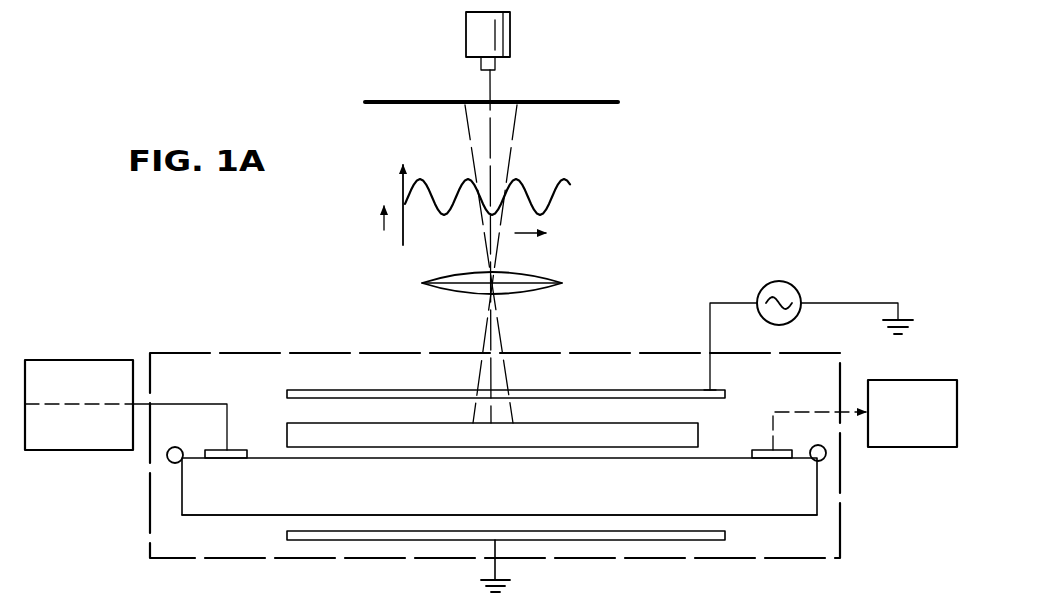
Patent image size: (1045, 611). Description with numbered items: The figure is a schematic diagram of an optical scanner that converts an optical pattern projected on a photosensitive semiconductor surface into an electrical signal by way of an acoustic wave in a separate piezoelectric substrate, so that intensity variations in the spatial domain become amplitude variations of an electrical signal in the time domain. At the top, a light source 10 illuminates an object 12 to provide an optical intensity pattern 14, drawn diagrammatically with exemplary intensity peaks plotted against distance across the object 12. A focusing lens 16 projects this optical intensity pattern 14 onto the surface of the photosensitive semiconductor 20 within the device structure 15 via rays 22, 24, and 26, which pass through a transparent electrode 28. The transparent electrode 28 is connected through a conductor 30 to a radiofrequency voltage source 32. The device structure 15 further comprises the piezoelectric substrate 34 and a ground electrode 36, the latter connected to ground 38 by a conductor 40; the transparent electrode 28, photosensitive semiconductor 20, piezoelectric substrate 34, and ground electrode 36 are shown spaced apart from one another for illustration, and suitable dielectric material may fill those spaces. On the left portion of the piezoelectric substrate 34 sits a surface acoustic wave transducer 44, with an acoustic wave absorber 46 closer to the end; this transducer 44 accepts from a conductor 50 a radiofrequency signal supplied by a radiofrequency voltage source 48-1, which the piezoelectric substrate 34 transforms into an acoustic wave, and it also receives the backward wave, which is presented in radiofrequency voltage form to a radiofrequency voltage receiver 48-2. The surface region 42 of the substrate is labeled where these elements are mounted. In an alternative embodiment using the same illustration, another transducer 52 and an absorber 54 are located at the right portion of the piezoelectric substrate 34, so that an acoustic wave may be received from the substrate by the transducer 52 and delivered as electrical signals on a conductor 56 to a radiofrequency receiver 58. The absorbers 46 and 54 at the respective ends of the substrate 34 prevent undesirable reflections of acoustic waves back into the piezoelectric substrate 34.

The light source 10 is at (505, 40).
The object 12 is at (618, 100).
The optical intensity pattern 14 is at (600, 174).
The device structure 15 is at (298, 352).
The focusing lens 16 is at (558, 277).
The photosensitive semiconductor 20 is at (700, 424).
The ray 22 is at (486, 312).
The ray 24 is at (494, 336).
The ray 26 is at (501, 348).
The transparent electrode 28 is at (600, 389).
The conductor 30 is at (741, 300).
The radiofrequency voltage source 32 is at (799, 289).
The piezoelectric substrate 34 is at (215, 510).
The ground electrode 36 is at (287, 536).
The ground 38 is at (488, 589).
The conductor 40 is at (498, 566).
The electrode surface 42 is at (270, 456).
The surface acoustic wave transducer 44 is at (214, 449).
The acoustic wave absorber 46 is at (175, 446).
The radiofrequency voltage source 48-1 is at (108, 360).
The radiofrequency voltage receiver 48-2 is at (97, 448).
The conductor 50 is at (212, 404).
The transducer 52 is at (763, 449).
The absorber 54 is at (814, 447).
The conductor 56 is at (820, 409).
The radiofrequency receiver 58 is at (935, 448).